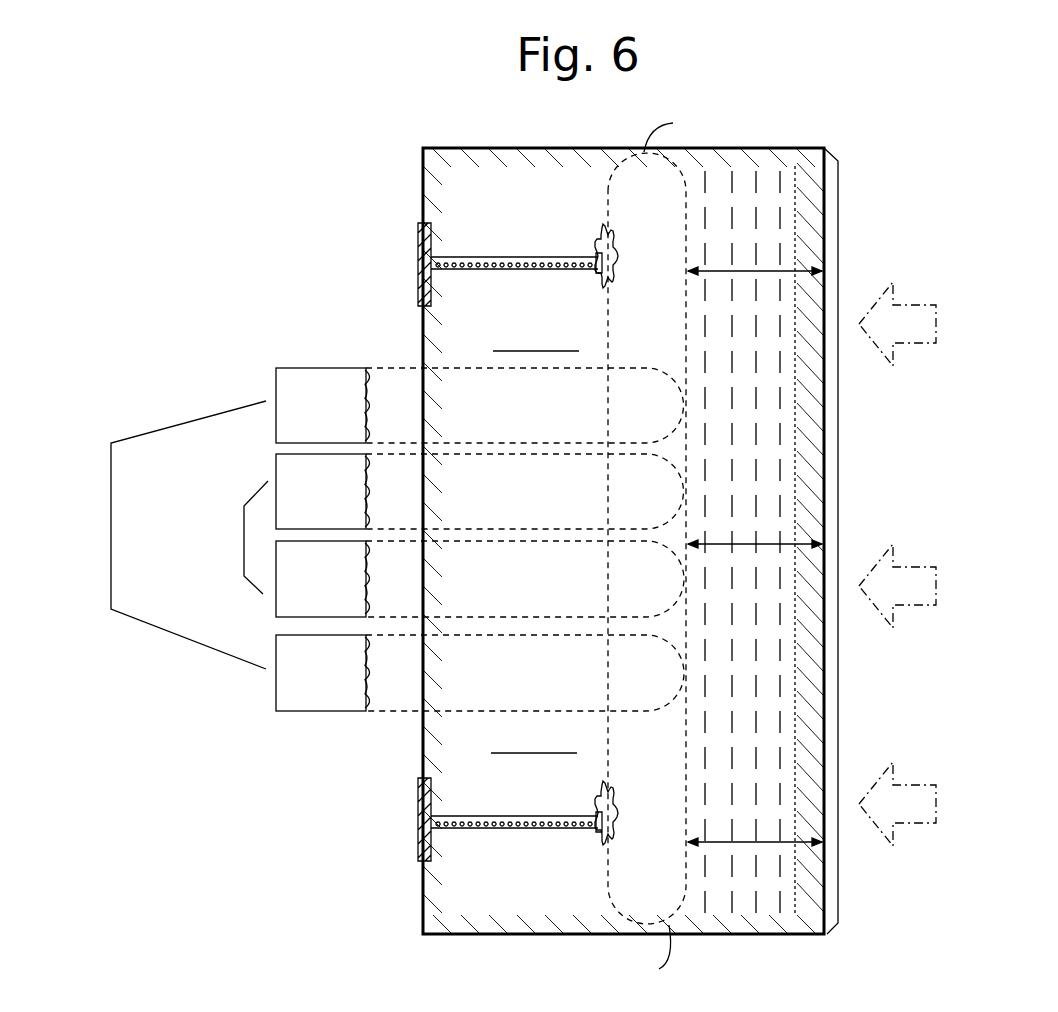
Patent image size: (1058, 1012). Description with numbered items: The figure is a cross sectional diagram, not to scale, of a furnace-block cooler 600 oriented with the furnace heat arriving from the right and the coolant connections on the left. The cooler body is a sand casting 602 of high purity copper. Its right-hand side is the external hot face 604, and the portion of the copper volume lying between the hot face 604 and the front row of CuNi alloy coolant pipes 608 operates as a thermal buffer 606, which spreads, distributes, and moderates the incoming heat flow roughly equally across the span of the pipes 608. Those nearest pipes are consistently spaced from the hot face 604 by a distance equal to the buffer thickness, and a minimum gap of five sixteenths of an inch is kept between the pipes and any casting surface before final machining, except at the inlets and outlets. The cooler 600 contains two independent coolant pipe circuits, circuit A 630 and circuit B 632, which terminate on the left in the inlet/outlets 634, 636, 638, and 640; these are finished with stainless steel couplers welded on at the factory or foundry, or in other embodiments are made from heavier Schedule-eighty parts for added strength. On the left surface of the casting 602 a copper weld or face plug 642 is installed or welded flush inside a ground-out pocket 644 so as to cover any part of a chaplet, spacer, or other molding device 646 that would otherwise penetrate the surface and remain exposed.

The furnace-block cooler 600 is at (192, 277).
The sand casting 602 is at (521, 324).
The hot face 604 is at (840, 443).
The thermal buffer 606 is at (730, 435).
The front row of CuNi alloy coolant pipes 608 is at (629, 339).
The coolant pipe circuit A 630 is at (110, 548).
The coolant pipe circuit B 632 is at (243, 548).
The inlet/outlet 634 is at (427, 413).
The inlet/outlet 636 is at (423, 680).
The inlet/outlet 638 is at (425, 499).
The inlet/outlet 640 is at (423, 586).
The copper weld or face plug 642 is at (417, 847).
The ground-out pocket 644 is at (431, 247).
The molding device 646 is at (568, 256).